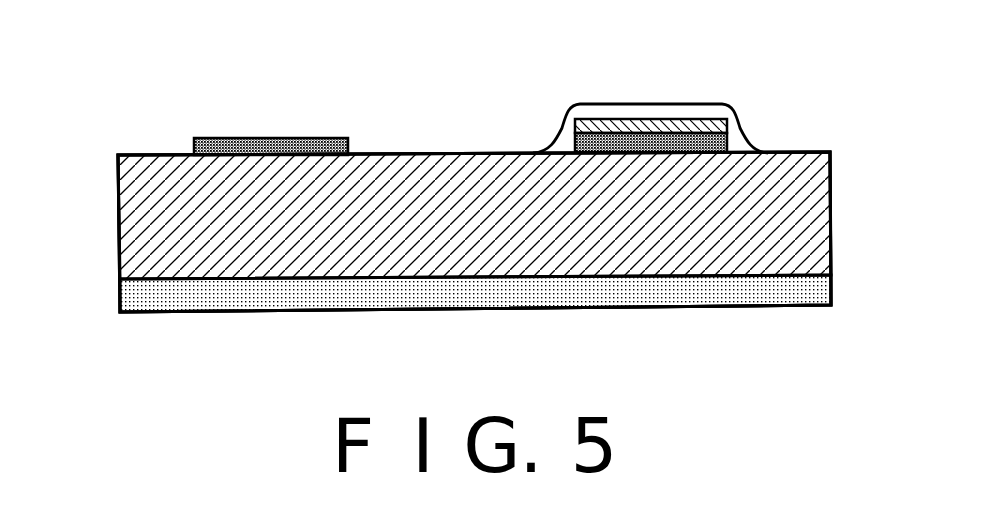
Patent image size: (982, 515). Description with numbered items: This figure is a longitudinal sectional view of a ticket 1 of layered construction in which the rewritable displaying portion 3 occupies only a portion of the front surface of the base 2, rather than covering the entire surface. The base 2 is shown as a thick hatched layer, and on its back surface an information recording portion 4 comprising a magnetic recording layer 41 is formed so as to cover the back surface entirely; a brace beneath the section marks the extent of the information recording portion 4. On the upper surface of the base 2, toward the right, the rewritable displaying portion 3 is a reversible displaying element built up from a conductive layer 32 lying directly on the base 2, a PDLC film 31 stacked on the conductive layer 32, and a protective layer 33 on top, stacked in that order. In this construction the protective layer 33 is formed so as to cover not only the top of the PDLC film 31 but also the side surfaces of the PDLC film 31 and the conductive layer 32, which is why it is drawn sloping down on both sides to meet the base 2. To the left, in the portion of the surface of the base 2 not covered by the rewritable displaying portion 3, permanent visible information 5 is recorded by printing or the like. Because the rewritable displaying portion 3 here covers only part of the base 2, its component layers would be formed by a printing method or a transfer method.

The ticket 1 is at (161, 148).
The base 2 is at (133, 225).
The rewritable displaying portion 3 is at (727, 87).
The information recording portion 4 is at (120, 327).
The permanent visible information 5 is at (195, 123).
The PDLC film 31 is at (578, 123).
The conductive layer 32 is at (572, 143).
The protective layer 33 is at (738, 125).
The magnetic recording layer 41 is at (133, 298).